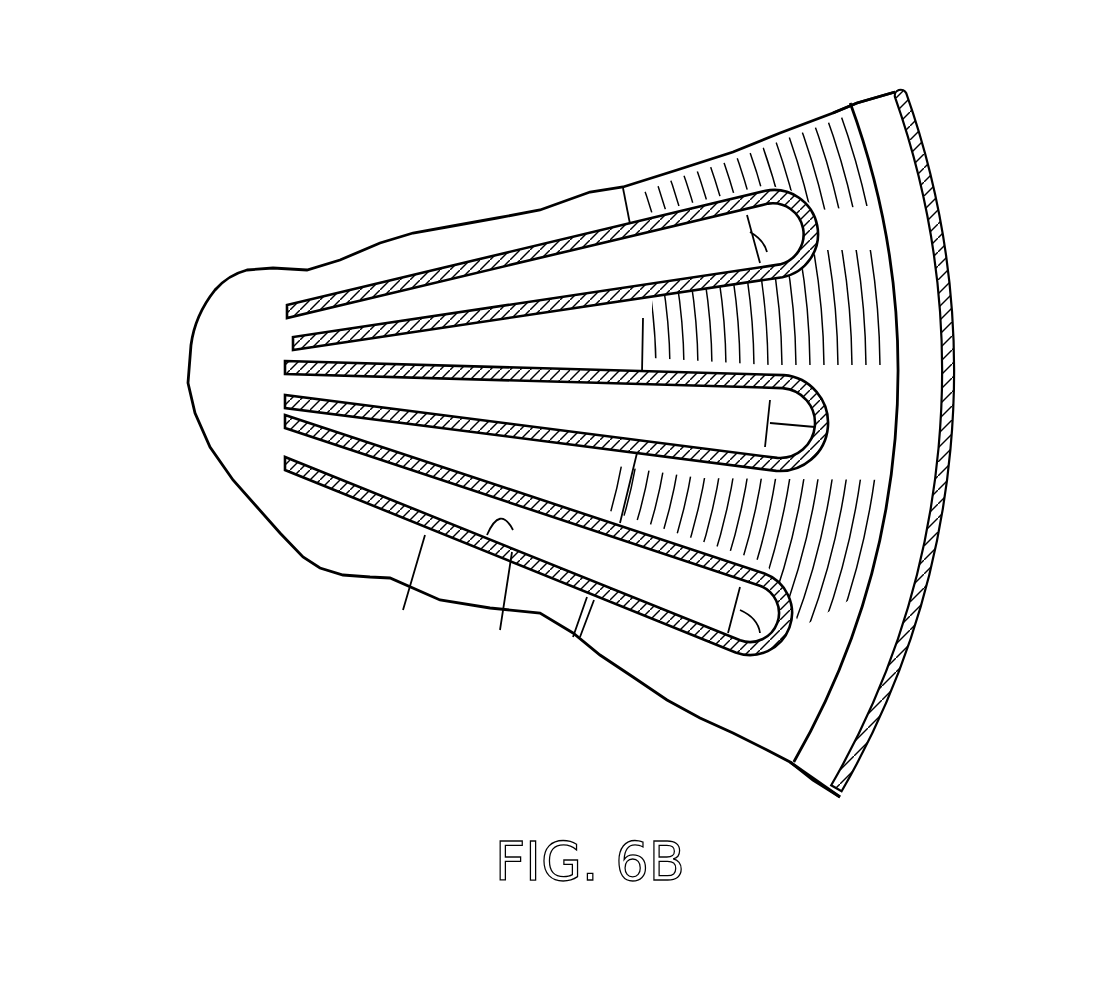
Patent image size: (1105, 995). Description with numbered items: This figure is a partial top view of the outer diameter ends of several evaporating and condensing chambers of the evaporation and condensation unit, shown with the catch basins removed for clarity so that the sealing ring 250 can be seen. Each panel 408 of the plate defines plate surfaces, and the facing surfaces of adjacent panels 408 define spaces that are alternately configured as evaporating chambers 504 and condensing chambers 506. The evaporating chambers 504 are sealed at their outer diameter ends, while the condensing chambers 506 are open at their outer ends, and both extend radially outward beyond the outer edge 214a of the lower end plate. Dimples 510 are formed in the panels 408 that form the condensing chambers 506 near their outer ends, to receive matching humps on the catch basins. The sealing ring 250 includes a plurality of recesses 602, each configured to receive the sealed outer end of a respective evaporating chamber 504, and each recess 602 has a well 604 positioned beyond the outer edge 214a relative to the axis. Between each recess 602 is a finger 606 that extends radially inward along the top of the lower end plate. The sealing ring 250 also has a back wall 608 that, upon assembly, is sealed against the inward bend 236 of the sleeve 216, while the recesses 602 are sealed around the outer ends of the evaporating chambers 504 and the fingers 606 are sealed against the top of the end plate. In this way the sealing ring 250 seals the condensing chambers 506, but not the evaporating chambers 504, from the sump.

The sleeve 216 is at (927, 148).
The inward bend 236 is at (857, 130).
The outer edge of lower end plate 214a is at (670, 392).
The well 604 is at (820, 236).
The recess 602 is at (757, 380).
The finger 606 is at (617, 293).
The evaporating chamber 504 is at (586, 296).
The condensing chamber 506 is at (573, 353).
The panel 408 is at (344, 505).
The dimple 510 is at (455, 597).
The sealing ring 250 is at (650, 658).
The back wall 608 is at (795, 757).